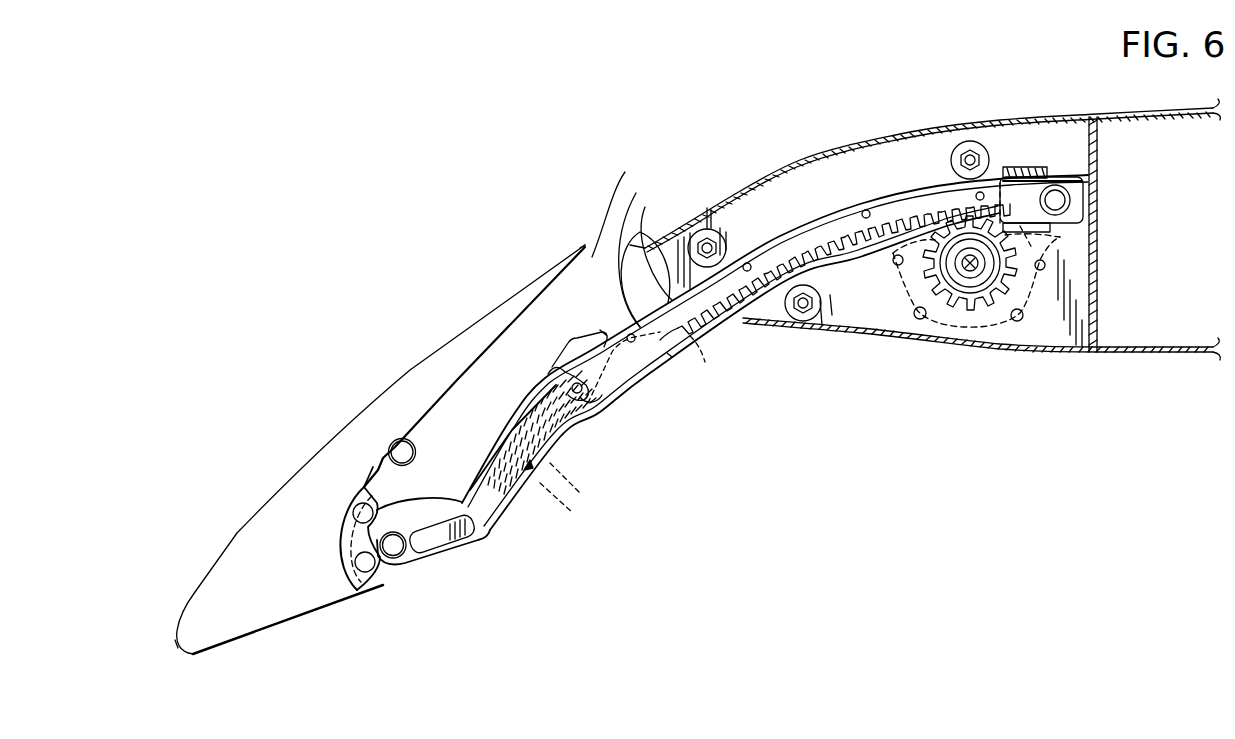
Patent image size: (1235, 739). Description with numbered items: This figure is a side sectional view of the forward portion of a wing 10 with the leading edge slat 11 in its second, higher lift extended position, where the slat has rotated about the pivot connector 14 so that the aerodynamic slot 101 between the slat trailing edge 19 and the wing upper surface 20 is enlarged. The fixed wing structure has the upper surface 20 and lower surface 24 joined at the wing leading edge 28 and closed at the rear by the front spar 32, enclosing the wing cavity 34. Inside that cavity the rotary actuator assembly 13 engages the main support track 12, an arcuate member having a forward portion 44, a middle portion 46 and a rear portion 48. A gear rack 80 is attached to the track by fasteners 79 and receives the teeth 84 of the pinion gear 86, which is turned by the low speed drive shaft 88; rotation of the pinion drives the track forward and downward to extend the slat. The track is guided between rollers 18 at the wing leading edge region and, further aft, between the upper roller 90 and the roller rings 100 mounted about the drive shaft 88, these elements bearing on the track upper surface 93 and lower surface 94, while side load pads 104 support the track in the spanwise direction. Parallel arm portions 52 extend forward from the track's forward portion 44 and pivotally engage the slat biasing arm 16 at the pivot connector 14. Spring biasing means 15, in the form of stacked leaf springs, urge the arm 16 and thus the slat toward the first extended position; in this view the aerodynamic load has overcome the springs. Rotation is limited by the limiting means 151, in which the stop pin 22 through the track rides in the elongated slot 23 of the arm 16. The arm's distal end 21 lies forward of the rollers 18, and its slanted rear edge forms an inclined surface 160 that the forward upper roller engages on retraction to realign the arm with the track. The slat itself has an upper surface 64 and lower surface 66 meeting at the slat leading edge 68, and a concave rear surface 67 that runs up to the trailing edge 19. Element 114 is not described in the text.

The forward portion of a wing 10 is at (960, 110).
The leading edge slat 11 is at (240, 533).
The main support track 12 is at (640, 380).
The rotary actuator assembly 13 is at (918, 322).
The pivot connector 14 is at (395, 558).
The spring biasing means 15 is at (560, 490).
The slat biasing arm 16 is at (422, 497).
The rollers 18 is at (727, 233).
The trailing edge 19 is at (585, 245).
The upper surface 20 is at (864, 146).
The distal end 21 is at (600, 332).
The stop pin 22 is at (585, 398).
The slot 23 is at (558, 370).
The lower surface 24 is at (840, 335).
The leading edge 28 is at (622, 297).
The front spar 32 is at (1098, 243).
The wing cavity 34 is at (1078, 143).
The forward portion 44 is at (498, 530).
The middle portion 46 is at (638, 196).
The rear portion 48 is at (1078, 182).
The arm portions 52 is at (440, 546).
The upper surface 64 is at (325, 445).
The lower surface 66 is at (302, 615).
The rear surface 67 is at (337, 535).
The leading edge 68 is at (175, 645).
The fasteners 79 is at (868, 210).
The gear rack 80 is at (706, 362).
The teeth 84 is at (1000, 295).
The pinion gear 86 is at (980, 292).
The low speed drive shaft 88 is at (958, 275).
The upper roller 90 is at (975, 143).
The upper surface 93 is at (646, 210).
The lower surface 94 is at (667, 355).
The roller rings 100 is at (966, 272).
The slot 101 is at (625, 172).
The side load pads 104 is at (712, 206).
The slider pad 114 is at (555, 462).
The limiting means 151 is at (570, 388).
The inclined surface 160 is at (572, 334).